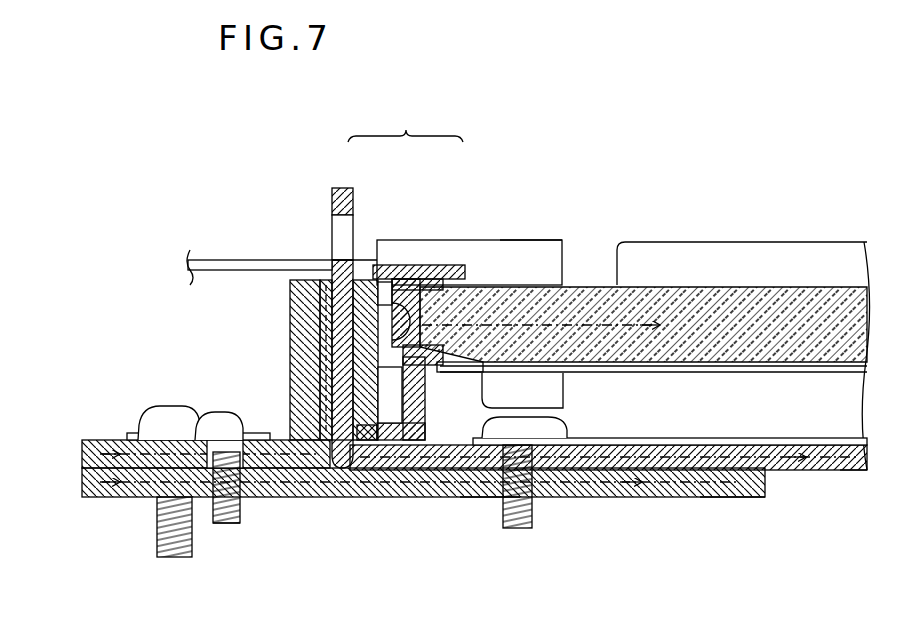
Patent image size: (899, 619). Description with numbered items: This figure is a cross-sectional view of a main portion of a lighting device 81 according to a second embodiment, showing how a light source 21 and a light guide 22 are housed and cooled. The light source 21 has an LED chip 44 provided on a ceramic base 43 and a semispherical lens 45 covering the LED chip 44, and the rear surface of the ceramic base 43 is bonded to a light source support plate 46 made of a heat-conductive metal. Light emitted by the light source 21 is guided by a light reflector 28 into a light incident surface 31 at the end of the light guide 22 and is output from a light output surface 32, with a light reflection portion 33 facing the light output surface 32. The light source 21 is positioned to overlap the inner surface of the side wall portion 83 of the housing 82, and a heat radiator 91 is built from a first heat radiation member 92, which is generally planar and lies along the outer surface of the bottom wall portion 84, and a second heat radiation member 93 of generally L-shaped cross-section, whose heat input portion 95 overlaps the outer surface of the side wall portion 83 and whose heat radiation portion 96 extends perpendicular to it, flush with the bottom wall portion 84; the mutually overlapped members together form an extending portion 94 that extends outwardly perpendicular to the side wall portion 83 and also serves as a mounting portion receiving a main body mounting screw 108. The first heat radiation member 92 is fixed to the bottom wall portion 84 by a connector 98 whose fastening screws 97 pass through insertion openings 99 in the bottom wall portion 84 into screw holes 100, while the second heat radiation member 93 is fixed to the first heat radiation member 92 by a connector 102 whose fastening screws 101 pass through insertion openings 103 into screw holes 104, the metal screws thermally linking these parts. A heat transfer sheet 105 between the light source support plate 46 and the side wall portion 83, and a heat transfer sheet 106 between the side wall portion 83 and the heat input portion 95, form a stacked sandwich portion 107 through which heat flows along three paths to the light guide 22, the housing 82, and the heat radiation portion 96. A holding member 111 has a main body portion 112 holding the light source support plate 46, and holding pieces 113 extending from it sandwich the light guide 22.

The light source 21 is at (405, 122).
The light guide 22 is at (583, 285).
The light reflector 28 is at (400, 345).
The light incident surface 31 is at (446, 362).
The light output surface 32 is at (762, 285).
The light reflection portion 33 is at (728, 374).
The ceramic base 43 is at (364, 290).
The LED chip 44 is at (395, 285).
The semispherical lens 45 is at (418, 290).
The light source support plate 46 is at (362, 278).
The lighting device 81 is at (703, 232).
The housing 82 is at (788, 472).
The side wall portion 83 is at (318, 357).
The bottom wall portion 84 is at (820, 472).
The heat radiator 91 is at (405, 500).
The first heat radiation member 92 is at (612, 498).
The second heat radiation member 93 is at (288, 336).
The extending portion 94 is at (112, 500).
The heat input portion 95 is at (290, 300).
The heat radiation portion 96 is at (118, 440).
The fastening screws 97 is at (520, 420).
The connector 98 is at (492, 512).
The insertion openings 99 is at (548, 438).
The screw holes 100 is at (522, 500).
The fastening screws 101 is at (220, 412).
The connector 102 is at (252, 520).
The insertion openings 103 is at (243, 436).
The screw holes 104 is at (228, 495).
The heat transfer sheet 105 is at (365, 442).
The heat transfer sheet 106 is at (325, 470).
The sandwich portion 107 is at (312, 270).
The main body mounting screw 108 is at (172, 405).
The holding member 111 is at (466, 240).
The main body portion 112 is at (462, 266).
The holding pieces 113 is at (513, 240).